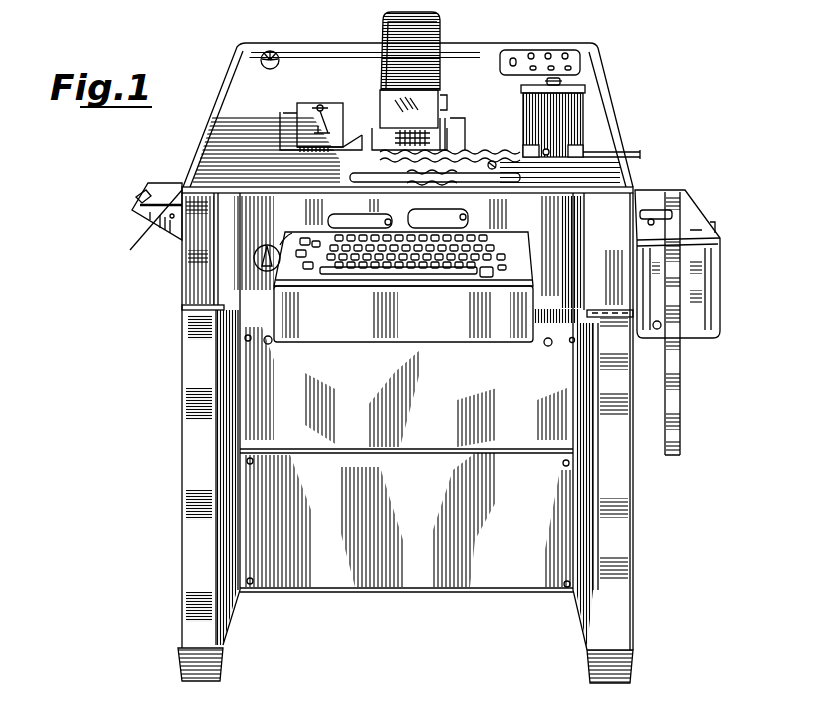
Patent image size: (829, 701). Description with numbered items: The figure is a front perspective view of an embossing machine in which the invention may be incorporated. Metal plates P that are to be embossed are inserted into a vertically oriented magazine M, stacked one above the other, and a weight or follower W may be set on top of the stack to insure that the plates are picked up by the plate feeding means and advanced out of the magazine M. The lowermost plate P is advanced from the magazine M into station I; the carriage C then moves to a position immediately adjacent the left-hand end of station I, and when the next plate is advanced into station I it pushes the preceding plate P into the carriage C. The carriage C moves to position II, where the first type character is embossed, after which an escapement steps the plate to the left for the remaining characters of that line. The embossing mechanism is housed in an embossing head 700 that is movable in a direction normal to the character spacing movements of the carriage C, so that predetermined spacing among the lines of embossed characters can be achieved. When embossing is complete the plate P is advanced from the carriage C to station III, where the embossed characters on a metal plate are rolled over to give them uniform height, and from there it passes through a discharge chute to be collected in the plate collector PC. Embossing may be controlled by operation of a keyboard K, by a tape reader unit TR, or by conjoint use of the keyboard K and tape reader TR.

The metal plate P is at (443, 700).
The keyboard K is at (407, 323).
The station III is at (350, 130).
The embossing head 700 is at (424, 32).
The position II is at (448, 150).
The station I is at (482, 152).
The carriage C is at (418, 158).
The magazine M is at (566, 122).
The weight or follower W is at (580, 90).
The plate collector PC is at (150, 228).
The tape reader unit TR is at (688, 205).